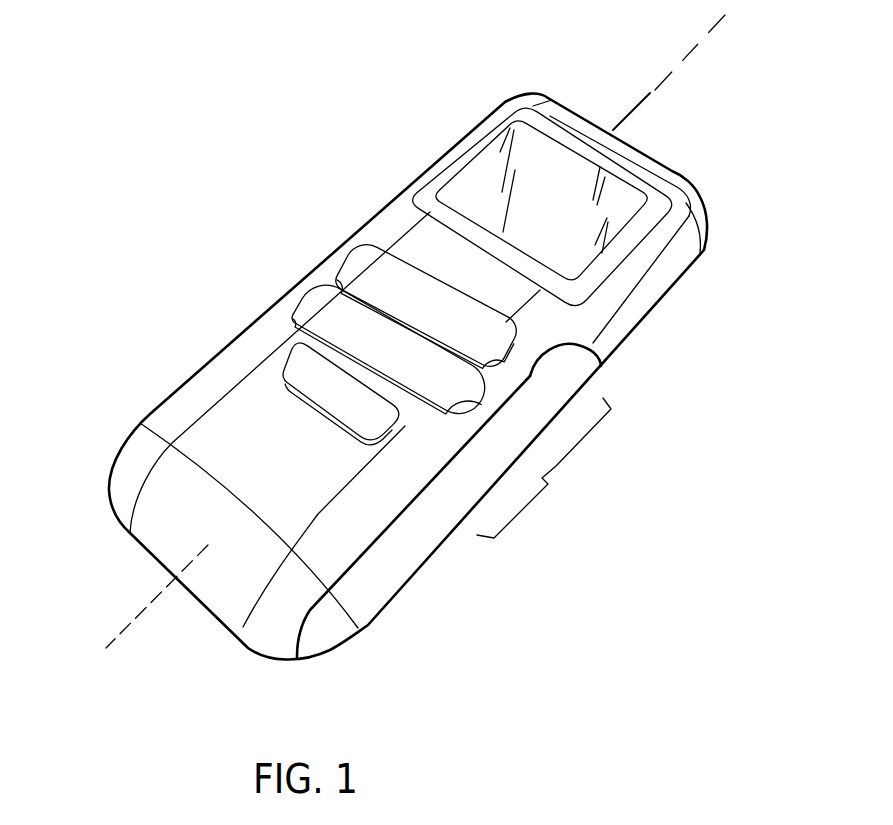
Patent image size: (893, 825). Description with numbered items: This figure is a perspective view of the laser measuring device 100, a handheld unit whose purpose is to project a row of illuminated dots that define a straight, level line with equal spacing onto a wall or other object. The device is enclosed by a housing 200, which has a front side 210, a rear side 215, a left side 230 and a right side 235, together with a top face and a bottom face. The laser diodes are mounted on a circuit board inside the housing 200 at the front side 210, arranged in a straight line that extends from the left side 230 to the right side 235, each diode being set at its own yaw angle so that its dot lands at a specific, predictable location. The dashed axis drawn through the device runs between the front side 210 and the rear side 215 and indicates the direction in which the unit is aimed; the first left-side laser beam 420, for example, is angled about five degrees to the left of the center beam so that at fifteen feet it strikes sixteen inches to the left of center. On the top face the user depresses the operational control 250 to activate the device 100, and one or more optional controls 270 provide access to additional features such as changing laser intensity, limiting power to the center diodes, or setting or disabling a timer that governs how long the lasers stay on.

The laser measuring device 100 is at (110, 93).
The housing 200 is at (173, 397).
The front side 210 is at (700, 79).
The rear side 215 is at (188, 617).
The left side 230 is at (316, 189).
The right side 235 is at (652, 337).
The operational control 250 is at (630, 193).
The optional controls 270 is at (547, 468).
The first left-side laser beam 420 is at (639, 100).